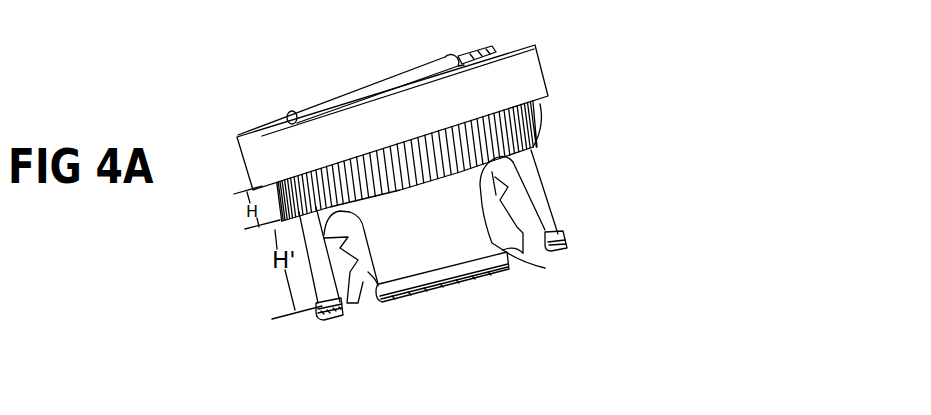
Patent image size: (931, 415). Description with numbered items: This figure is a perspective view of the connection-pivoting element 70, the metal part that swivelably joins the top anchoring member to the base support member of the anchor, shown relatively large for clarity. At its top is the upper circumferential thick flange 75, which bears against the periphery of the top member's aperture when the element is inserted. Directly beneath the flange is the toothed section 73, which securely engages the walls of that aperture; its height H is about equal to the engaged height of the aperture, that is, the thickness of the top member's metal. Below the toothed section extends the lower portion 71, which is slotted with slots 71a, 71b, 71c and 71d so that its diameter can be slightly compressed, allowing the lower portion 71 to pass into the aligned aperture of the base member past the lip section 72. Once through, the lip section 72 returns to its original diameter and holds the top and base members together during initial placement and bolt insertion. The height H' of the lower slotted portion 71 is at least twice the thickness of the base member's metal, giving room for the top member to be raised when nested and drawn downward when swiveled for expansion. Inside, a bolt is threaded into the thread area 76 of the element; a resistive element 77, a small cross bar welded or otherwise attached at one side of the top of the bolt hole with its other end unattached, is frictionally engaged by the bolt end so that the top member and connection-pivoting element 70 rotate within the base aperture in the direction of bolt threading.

The connection-pivoting element 70 is at (391, 56).
The lower portion 71 is at (542, 183).
The slot 71a is at (537, 255).
The slot 71b is at (497, 242).
The slot 71c is at (374, 290).
The slot 71d is at (355, 304).
The lip section 72 is at (318, 307).
The toothed section 73 is at (541, 121).
The upper circumferential thick flange 75 is at (541, 52).
The thread area 76 is at (326, 252).
The resistive element 77 is at (329, 98).